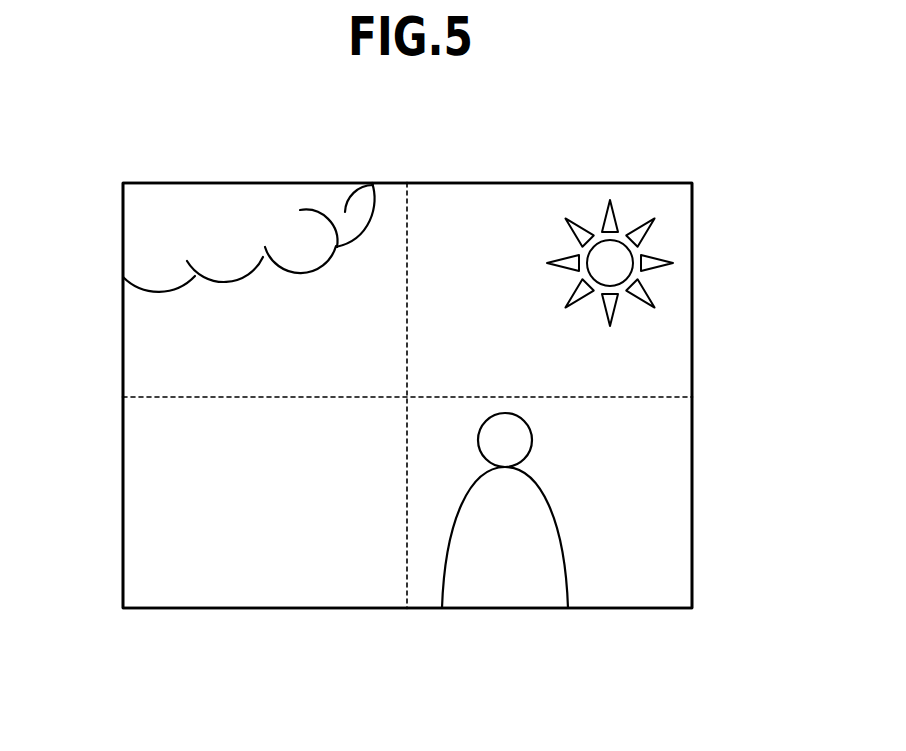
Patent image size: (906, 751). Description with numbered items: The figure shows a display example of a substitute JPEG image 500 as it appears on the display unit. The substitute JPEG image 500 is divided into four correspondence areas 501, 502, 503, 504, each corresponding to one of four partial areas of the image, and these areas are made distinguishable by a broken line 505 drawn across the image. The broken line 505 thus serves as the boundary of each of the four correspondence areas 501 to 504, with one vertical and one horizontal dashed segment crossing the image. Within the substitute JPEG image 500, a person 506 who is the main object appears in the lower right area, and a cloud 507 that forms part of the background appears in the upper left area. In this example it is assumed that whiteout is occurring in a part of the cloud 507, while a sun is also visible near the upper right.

The substitute JPEG image 500 is at (693, 283).
The correspondence area 501 is at (137, 335).
The correspondence area 502 is at (512, 198).
The correspondence area 503 is at (137, 500).
The correspondence area 504 is at (678, 496).
The broken line 505 is at (408, 292).
The person 506 is at (545, 550).
The cloud 507 is at (264, 198).